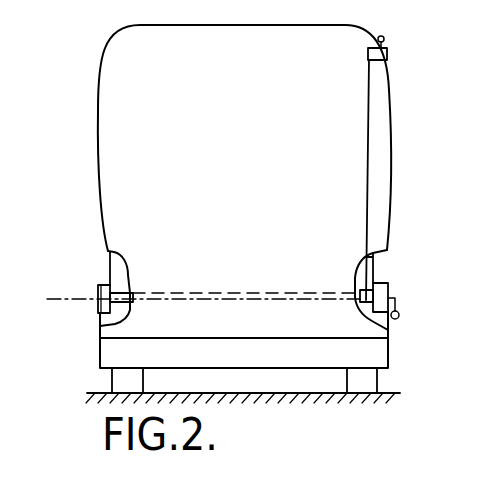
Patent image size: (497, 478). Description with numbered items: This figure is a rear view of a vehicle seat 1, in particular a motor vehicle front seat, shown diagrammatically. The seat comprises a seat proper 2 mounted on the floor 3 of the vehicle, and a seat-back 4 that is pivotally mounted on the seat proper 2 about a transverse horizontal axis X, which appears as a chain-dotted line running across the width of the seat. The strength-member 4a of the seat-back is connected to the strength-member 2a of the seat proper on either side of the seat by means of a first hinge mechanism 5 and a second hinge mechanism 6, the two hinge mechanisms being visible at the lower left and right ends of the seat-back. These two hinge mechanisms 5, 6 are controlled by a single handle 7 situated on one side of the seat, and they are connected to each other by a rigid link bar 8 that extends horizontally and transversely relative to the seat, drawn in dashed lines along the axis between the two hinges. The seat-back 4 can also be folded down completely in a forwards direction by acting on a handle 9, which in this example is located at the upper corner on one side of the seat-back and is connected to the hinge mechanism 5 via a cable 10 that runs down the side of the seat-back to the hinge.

The vehicle seat 1 is at (83, 155).
The seat proper 2 is at (112, 352).
The strength-member of the seat proper 2a is at (99, 321).
The floor 3 is at (280, 395).
The seat-back 4 is at (123, 73).
The strength-member of the seat-back 4a is at (110, 258).
The first hinge mechanism 5 is at (380, 288).
The second hinge mechanism 6 is at (100, 285).
The handle 7 is at (400, 314).
The rigid link bar 8 is at (198, 295).
The handle 9 is at (383, 38).
The cable 10 is at (357, 172).